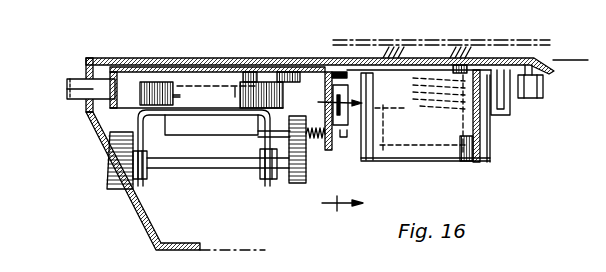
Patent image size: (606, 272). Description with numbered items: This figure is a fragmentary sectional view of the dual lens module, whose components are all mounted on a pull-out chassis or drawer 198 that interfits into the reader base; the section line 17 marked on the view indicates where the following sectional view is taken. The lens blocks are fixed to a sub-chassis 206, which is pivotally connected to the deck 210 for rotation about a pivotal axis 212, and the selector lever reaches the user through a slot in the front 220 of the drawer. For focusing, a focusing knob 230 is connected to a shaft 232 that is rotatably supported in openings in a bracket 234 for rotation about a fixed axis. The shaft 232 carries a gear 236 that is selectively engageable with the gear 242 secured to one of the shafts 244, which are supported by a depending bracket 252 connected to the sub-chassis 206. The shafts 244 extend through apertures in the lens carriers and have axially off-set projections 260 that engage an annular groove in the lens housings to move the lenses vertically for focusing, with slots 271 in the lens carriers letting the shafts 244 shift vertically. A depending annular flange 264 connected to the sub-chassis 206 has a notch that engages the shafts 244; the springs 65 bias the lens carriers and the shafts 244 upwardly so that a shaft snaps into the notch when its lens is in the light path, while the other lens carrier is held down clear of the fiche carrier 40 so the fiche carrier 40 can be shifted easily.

The fiche carrier 40 is at (486, 34).
The springs 65 is at (482, 117).
The pull-out chassis or drawer 198 is at (113, 58).
The sub-chassis 206 is at (307, 72).
The deck 210 is at (97, 58).
The pivotal axis 212 is at (240, 58).
The front of the drawer 220 is at (86, 71).
The focusing knob 230 is at (108, 166).
The shaft 232 is at (178, 167).
The bracket 234 is at (260, 134).
The gear 236 is at (292, 185).
The gear 242 is at (290, 137).
The shafts 244 is at (313, 146).
The bracket 252 is at (343, 72).
The axially off-set projections 260 is at (487, 141).
The depending annular flange 264 is at (175, 128).
The slots 271 is at (463, 117).
The section line 17- 17 is at (328, 150).